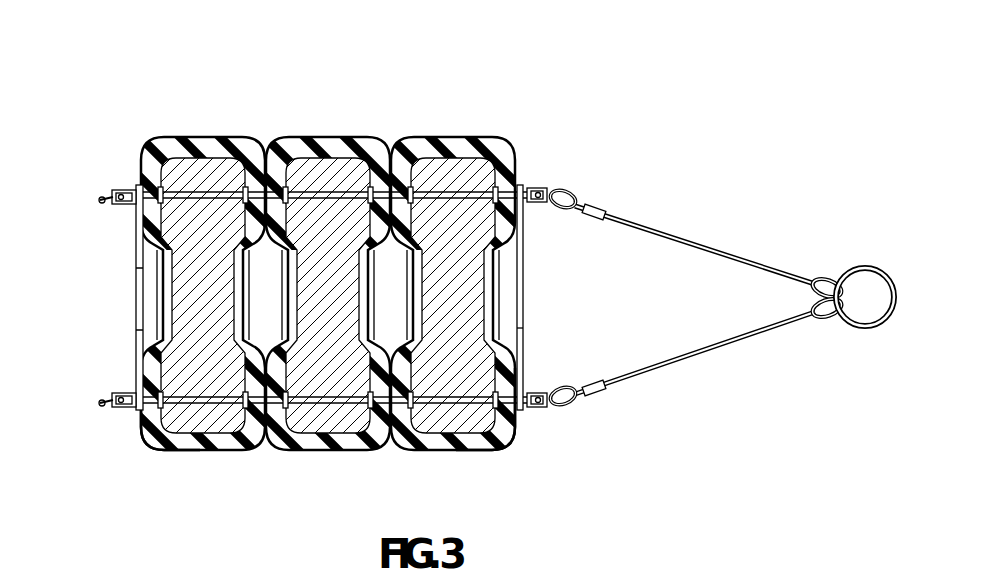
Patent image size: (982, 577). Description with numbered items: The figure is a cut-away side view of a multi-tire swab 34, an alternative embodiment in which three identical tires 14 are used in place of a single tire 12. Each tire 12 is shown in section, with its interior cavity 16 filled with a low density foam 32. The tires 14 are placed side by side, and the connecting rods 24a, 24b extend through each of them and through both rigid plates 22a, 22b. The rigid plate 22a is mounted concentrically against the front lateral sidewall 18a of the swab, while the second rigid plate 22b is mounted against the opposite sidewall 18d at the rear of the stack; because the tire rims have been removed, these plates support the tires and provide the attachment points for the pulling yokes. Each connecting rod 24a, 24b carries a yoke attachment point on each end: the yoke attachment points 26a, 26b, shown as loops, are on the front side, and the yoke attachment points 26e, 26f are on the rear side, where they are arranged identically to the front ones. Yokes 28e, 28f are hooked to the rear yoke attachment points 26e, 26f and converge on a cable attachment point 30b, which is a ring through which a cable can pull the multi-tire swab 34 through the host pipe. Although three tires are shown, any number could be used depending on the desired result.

The multi-tire swab 34 is at (447, 258).
The tire 12 is at (328, 315).
The tires 14 is at (396, 274).
The interior cavity 16 is at (310, 337).
The low density foam 32 is at (328, 254).
The front lateral sidewall 18a is at (127, 429).
The end float 18d is at (528, 436).
The rigid plate 22a is at (79, 297).
The second rigid plate 22b is at (561, 297).
The connecting rod 24a is at (298, 364).
The connecting rod 24b is at (297, 219).
The yoke attachment point 26a is at (83, 380).
The yoke attachment point 26b is at (75, 166).
The yoke attachment point 26e is at (585, 430).
The yoke attachment point 26f is at (588, 179).
The yoke 28e is at (709, 355).
The yoke 28f is at (709, 252).
The cable attachment point 30b is at (862, 329).